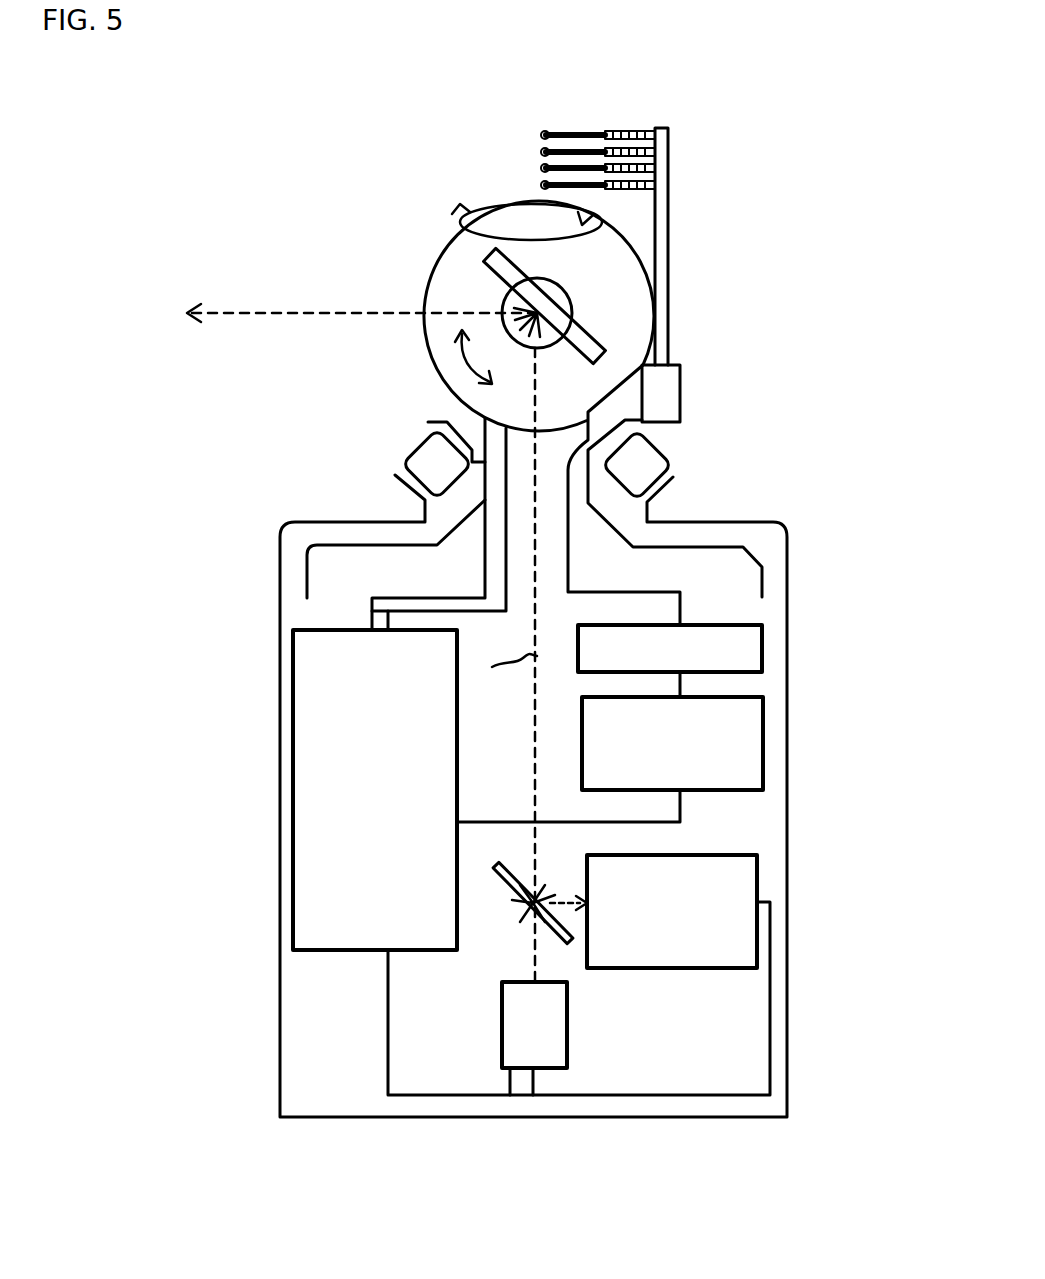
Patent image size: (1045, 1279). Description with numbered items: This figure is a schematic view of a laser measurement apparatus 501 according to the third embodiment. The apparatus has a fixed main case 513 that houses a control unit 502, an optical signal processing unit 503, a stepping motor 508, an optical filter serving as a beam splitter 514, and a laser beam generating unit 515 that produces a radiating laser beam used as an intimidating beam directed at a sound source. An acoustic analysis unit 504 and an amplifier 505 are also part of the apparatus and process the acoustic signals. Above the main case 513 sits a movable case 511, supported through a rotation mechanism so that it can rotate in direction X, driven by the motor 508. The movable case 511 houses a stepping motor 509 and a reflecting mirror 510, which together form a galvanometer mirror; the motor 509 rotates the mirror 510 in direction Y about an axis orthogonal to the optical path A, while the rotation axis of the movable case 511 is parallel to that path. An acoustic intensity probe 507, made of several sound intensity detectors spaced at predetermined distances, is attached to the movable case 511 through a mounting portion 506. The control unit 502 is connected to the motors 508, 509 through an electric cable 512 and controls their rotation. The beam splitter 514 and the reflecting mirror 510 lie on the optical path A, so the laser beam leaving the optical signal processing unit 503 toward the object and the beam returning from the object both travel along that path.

The laser measurement apparatus 501 is at (245, 530).
The control unit 502 is at (293, 830).
The optical signal processing unit 503 is at (758, 873).
The acoustic analysis unit 504 is at (765, 718).
The amplifier 505 is at (765, 632).
The mounting portion 506 is at (672, 237).
The acoustic intensity probe 507 is at (578, 126).
The stepping motor 508 is at (405, 447).
The stepping motor 509 is at (552, 278).
The reflecting mirror 510 is at (490, 248).
The movable case 511 is at (445, 278).
The electric cable 512 is at (372, 604).
The main case 513 is at (280, 695).
The beam splitter 514 is at (517, 867).
The laser beam generating unit 515 is at (510, 1100).